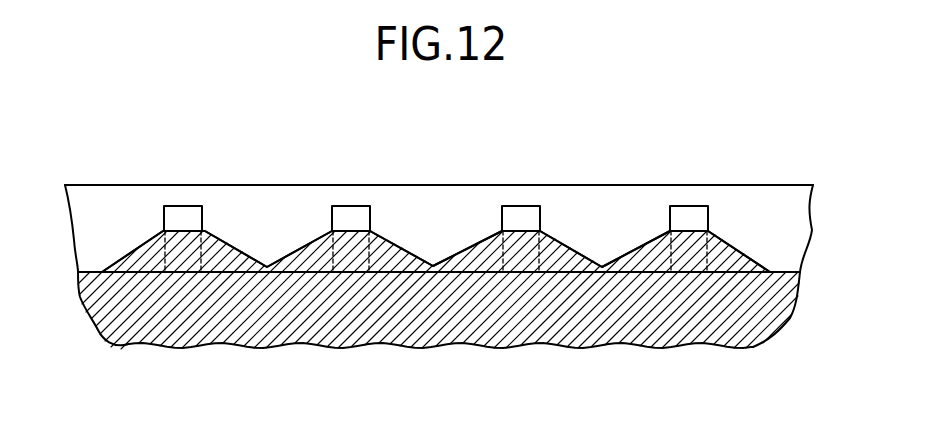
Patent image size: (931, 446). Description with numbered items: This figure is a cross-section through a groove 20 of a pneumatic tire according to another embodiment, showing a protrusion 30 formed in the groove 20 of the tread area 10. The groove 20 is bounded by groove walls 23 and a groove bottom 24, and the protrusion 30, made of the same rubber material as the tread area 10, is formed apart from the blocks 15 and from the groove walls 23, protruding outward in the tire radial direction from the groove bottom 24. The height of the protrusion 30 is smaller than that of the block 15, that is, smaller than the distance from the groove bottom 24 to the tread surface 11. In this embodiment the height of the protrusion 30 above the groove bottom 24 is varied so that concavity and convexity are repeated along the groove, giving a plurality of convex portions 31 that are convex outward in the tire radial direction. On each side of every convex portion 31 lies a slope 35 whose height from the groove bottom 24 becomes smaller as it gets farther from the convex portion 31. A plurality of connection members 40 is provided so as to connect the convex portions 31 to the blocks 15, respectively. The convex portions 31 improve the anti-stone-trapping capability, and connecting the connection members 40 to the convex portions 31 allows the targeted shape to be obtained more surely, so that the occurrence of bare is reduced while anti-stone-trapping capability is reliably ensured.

The tread area 10 is at (258, 327).
The protrusion 30 is at (146, 270).
The slope 35 is at (140, 245).
The connection member 40 is at (185, 215).
The convex portion 31 is at (178, 224).
The tread surface 11 is at (428, 185).
The groove wall 23 is at (248, 197).
The block 15 is at (558, 197).
The groove bottom 24 is at (88, 268).
The groove 20 is at (107, 192).